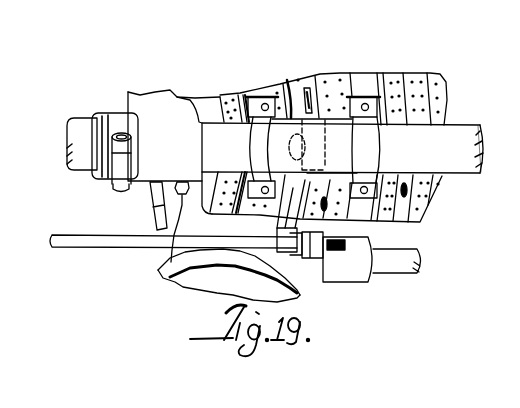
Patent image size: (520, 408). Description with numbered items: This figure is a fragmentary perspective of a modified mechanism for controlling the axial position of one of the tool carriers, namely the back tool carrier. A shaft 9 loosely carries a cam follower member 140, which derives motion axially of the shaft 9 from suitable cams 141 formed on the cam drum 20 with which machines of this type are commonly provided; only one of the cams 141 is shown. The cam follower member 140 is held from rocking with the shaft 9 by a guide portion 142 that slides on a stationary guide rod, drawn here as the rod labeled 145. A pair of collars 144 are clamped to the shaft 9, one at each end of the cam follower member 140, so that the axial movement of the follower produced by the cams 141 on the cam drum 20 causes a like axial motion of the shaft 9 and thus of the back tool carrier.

The shaft 9 is at (450, 140).
The cam drum 20 is at (373, 73).
The cam follower member 140 is at (290, 93).
The cam 141 is at (319, 67).
The guide portion 142 is at (302, 183).
The collars 144 is at (272, 147).
The rod 145 is at (140, 243).